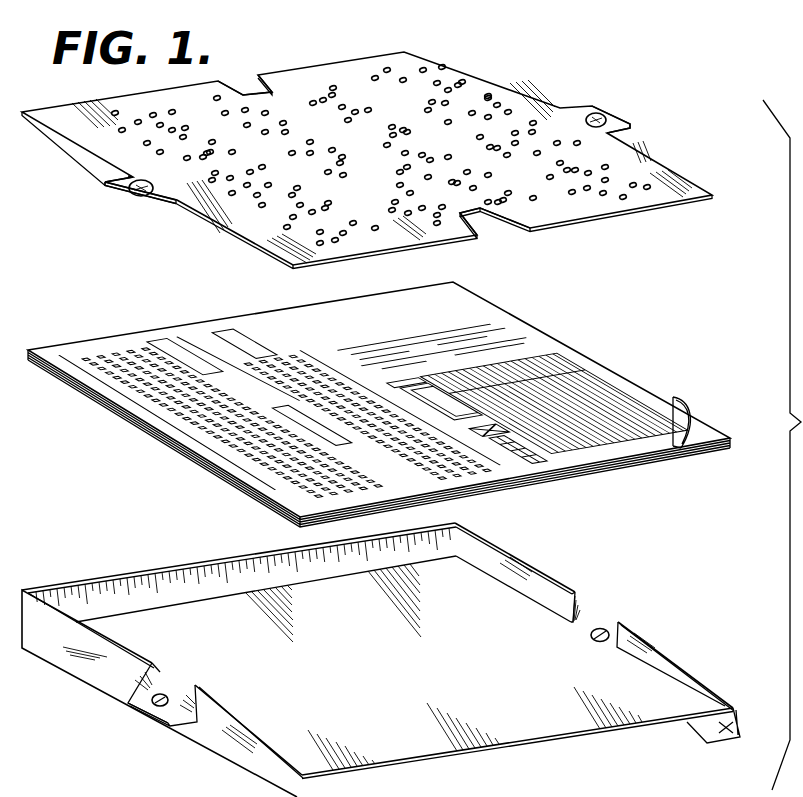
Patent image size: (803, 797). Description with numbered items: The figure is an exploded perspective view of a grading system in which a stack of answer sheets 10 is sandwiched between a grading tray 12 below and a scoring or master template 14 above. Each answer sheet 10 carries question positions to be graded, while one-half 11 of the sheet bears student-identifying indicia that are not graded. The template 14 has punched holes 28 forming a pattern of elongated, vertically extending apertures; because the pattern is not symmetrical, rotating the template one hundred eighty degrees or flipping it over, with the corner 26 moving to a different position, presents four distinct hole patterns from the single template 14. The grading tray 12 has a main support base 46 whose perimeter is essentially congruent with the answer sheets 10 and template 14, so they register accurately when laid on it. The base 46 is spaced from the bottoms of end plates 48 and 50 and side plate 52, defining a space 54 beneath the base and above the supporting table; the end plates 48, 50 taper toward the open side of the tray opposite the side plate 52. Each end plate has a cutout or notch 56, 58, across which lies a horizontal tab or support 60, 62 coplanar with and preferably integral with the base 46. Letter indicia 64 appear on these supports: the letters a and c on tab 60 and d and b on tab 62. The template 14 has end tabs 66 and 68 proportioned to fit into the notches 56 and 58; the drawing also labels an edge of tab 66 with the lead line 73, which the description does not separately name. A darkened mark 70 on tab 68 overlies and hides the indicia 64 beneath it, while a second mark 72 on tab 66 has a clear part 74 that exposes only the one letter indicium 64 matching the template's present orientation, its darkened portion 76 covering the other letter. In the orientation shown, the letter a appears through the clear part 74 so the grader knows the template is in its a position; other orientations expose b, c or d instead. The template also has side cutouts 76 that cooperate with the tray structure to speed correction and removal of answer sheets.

The answer sheet 10 is at (704, 421).
The one-half of answer sheet 11 is at (478, 313).
The grading tray 12 is at (399, 660).
The scoring template 14 is at (538, 81).
The corner 26 is at (428, 63).
The punched holes 28 is at (488, 94).
The main support base 46 is at (398, 688).
The end plate 48 is at (200, 738).
The end plate 50 is at (514, 562).
The side plate 52 is at (174, 570).
The space 54 is at (738, 722).
The cutout or notch 56 is at (153, 675).
The cutout or notch 58 is at (583, 602).
The horizontal tab or support 60 is at (142, 718).
The horizontal tab or support 62 is at (609, 620).
The indicia 64 is at (589, 634).
The tab 66 is at (153, 204).
The tab 68 is at (630, 123).
The darkened mark 70 is at (594, 111).
The mark 72 is at (128, 193).
The tab edge 73 is at (173, 205).
The clear part 74 is at (127, 175).
The darkened portion / side cutout 76 is at (246, 91).